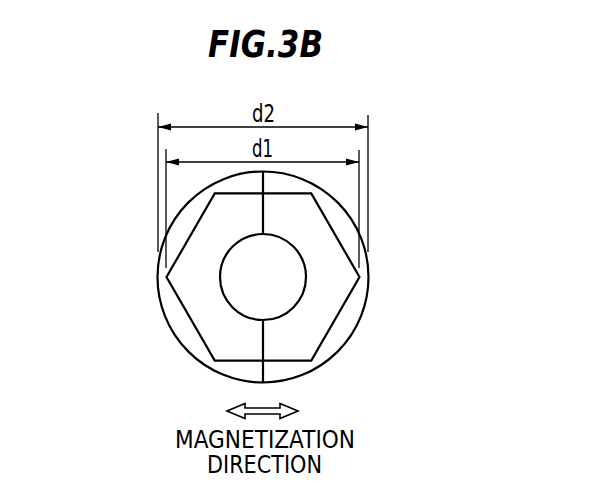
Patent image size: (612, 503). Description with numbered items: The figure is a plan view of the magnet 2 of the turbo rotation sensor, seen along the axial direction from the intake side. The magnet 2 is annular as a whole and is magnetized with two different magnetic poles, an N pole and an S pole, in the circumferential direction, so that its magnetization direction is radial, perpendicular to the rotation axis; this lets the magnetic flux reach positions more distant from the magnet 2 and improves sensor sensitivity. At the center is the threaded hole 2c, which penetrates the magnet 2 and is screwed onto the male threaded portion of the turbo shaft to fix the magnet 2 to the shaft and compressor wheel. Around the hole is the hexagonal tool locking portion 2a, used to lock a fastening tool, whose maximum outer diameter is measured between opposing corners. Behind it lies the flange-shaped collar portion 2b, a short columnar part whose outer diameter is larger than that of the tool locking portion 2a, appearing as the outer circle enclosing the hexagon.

The magnet 2 is at (128, 129).
The tool locking portion 2a is at (210, 330).
The collar portion 2b is at (352, 303).
The threaded hole 2c is at (280, 298).